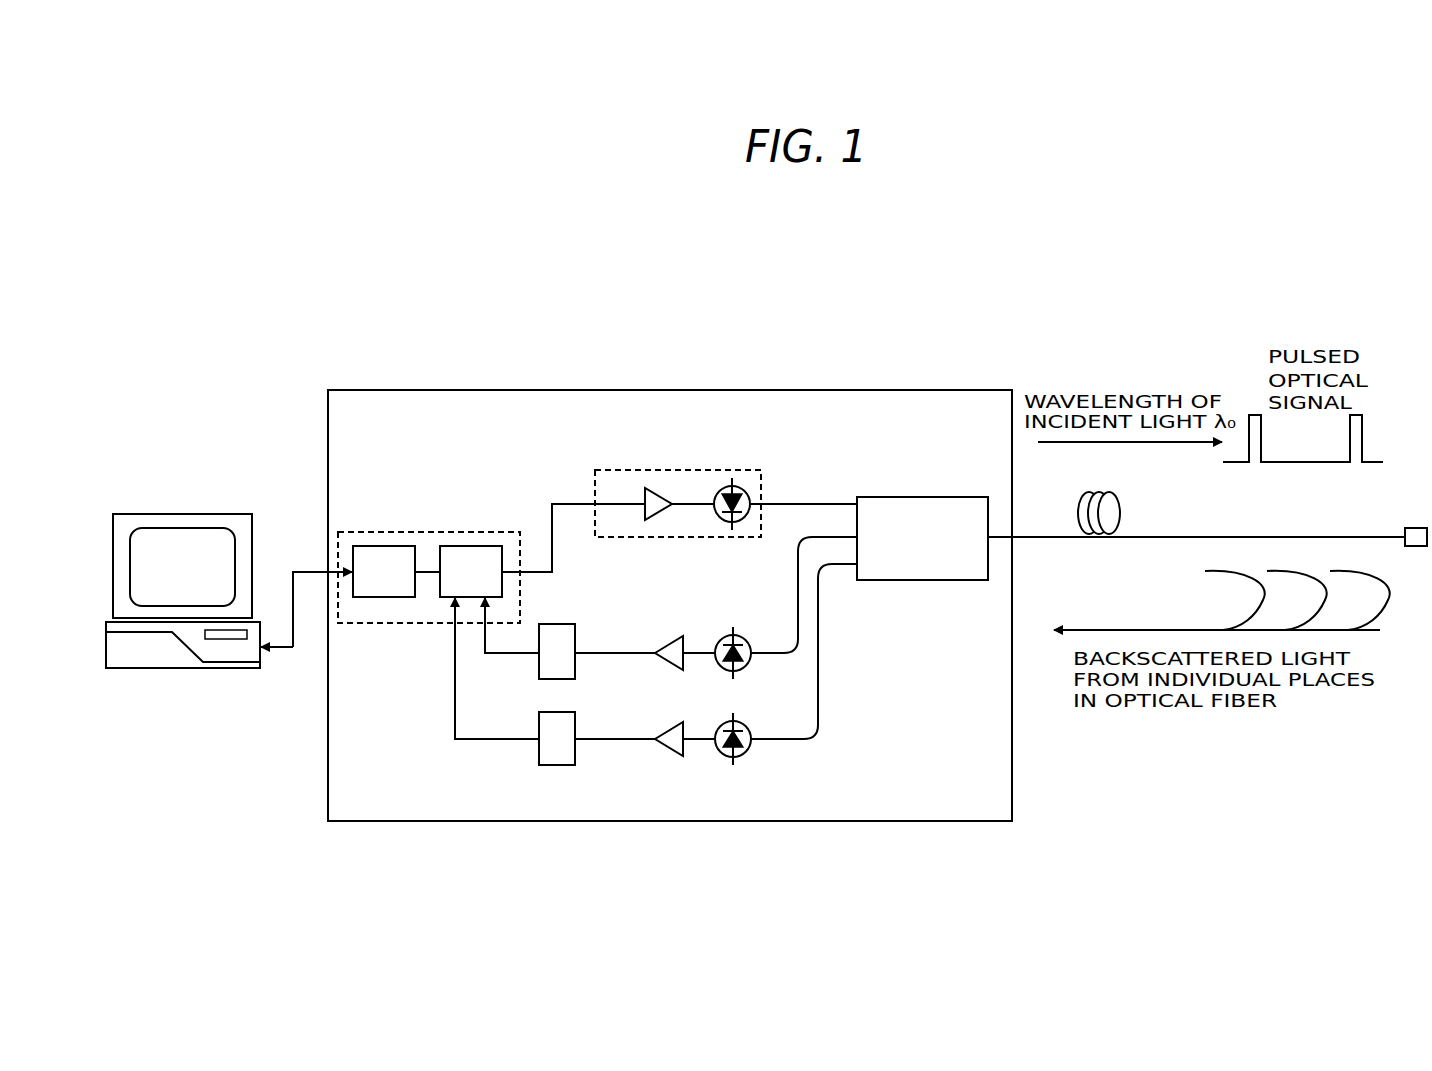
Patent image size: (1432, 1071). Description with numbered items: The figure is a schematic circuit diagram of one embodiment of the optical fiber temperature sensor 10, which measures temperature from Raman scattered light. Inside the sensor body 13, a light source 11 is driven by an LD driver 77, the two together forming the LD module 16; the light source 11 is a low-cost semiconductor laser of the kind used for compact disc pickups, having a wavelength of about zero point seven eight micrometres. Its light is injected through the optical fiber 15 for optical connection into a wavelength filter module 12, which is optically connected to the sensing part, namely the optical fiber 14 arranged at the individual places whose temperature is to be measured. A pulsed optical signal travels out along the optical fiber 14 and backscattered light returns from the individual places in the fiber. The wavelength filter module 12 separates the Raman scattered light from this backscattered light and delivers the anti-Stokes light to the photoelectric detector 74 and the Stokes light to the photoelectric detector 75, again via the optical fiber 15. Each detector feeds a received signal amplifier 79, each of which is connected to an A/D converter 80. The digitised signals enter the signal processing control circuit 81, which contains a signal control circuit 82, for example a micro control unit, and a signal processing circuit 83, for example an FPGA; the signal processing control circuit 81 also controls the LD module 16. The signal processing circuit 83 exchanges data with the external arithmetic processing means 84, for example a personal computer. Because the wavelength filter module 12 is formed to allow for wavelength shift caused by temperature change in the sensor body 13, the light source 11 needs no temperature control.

The optical fiber temperature sensor 10 is at (1222, 330).
The light source 11 is at (727, 522).
The wavelength filter module 12 is at (870, 581).
The sensor body 13 is at (922, 389).
The optical fiber 14 is at (1119, 505).
The optical fiber for optical connection 15 is at (830, 564).
The LD module 16 is at (738, 470).
The photoelectric detector 74 is at (726, 668).
The photoelectric detector 75 is at (726, 754).
The LD driver 77 is at (650, 520).
The received signal amplifier 79 is at (668, 660).
The A/D converter 80 is at (539, 662).
The signal processing control circuit 81 is at (410, 624).
The signal control circuit 82 is at (492, 546).
The signal processing circuit 83 is at (402, 546).
The external arithmetic processing means 84 is at (218, 514).